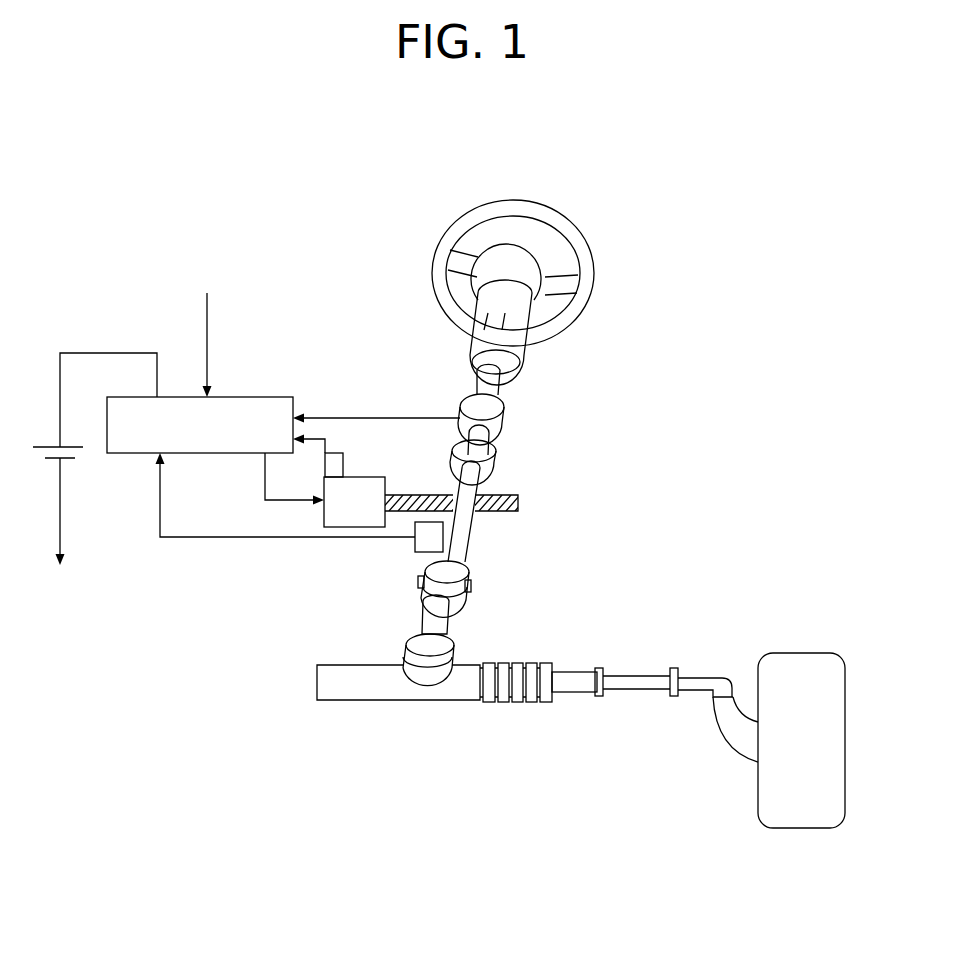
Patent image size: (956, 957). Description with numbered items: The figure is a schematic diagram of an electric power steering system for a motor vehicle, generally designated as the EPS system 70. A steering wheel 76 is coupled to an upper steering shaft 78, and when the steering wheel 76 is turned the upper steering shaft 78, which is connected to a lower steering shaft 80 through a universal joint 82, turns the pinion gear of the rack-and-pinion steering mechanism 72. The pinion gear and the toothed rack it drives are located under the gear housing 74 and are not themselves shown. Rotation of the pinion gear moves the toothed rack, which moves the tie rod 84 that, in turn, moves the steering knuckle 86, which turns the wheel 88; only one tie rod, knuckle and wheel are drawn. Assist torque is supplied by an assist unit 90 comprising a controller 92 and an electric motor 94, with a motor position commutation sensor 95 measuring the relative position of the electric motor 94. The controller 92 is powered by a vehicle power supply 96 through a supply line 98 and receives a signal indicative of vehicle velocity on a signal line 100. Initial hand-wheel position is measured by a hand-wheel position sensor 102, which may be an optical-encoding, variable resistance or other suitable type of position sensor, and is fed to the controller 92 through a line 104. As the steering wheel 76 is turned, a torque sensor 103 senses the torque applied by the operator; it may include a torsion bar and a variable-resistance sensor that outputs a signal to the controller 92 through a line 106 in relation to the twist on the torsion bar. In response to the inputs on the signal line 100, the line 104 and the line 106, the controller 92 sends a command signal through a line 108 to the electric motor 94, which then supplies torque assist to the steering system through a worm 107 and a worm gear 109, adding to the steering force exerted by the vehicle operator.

The EPS system 70 is at (670, 236).
The steering mechanism 72 is at (515, 712).
The gear housing 74 is at (416, 650).
The steering wheel 76 is at (564, 212).
The upper steering shaft 78 is at (504, 372).
The lower steering shaft 80 is at (446, 630).
The universal joint 82 is at (470, 586).
The tie rod 84 is at (636, 692).
The steering knuckle 86 is at (730, 750).
The wheel 88 is at (803, 653).
The assist unit 90 is at (300, 325).
The controller 92 is at (278, 397).
The electric motor 94 is at (372, 480).
The motor position commutation sensor 95 is at (340, 453).
The vehicle power supply 96 is at (45, 447).
The supply line 98 is at (100, 353).
The signal line 100 is at (207, 318).
The hand-wheel position sensor 102 is at (416, 552).
The torque sensor 103 is at (504, 422).
The line 104 is at (210, 537).
The line 106 is at (388, 418).
The worm 107 is at (519, 503).
The line 108 is at (286, 502).
The worm gear 109 is at (498, 463).